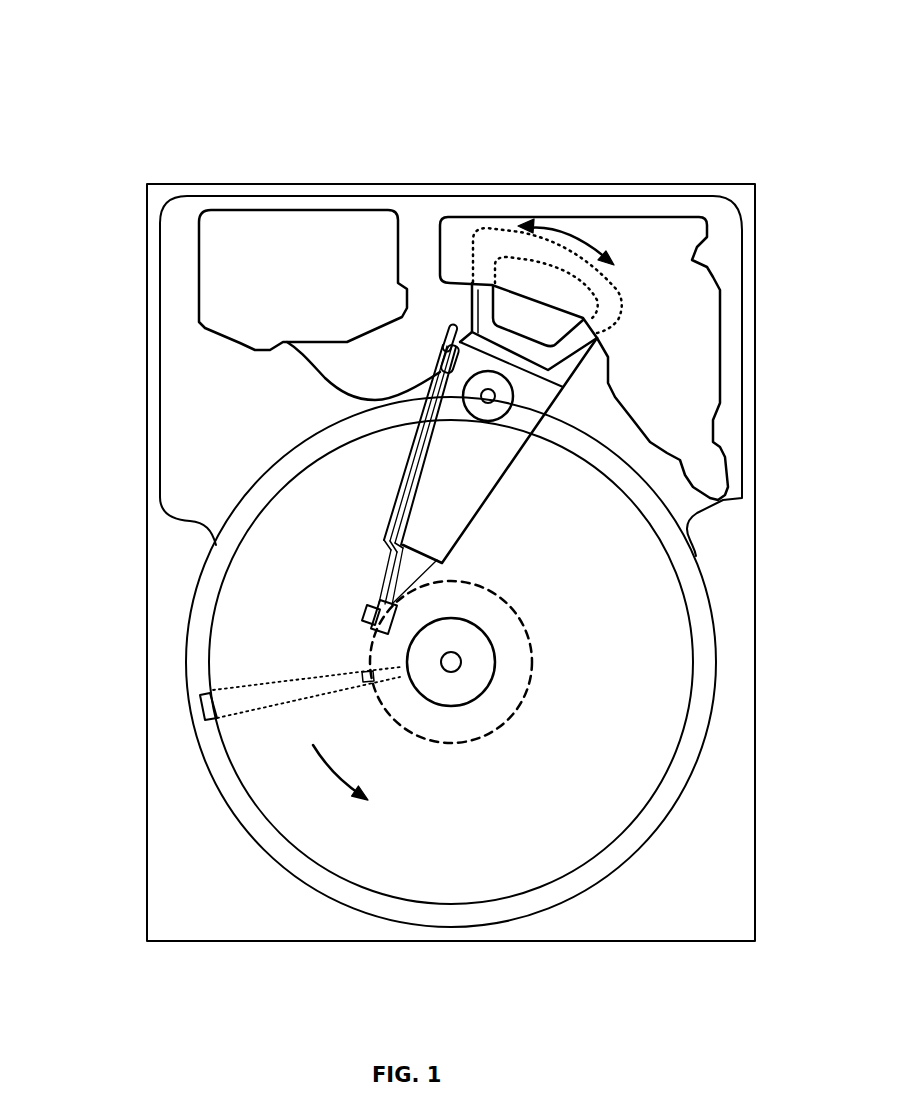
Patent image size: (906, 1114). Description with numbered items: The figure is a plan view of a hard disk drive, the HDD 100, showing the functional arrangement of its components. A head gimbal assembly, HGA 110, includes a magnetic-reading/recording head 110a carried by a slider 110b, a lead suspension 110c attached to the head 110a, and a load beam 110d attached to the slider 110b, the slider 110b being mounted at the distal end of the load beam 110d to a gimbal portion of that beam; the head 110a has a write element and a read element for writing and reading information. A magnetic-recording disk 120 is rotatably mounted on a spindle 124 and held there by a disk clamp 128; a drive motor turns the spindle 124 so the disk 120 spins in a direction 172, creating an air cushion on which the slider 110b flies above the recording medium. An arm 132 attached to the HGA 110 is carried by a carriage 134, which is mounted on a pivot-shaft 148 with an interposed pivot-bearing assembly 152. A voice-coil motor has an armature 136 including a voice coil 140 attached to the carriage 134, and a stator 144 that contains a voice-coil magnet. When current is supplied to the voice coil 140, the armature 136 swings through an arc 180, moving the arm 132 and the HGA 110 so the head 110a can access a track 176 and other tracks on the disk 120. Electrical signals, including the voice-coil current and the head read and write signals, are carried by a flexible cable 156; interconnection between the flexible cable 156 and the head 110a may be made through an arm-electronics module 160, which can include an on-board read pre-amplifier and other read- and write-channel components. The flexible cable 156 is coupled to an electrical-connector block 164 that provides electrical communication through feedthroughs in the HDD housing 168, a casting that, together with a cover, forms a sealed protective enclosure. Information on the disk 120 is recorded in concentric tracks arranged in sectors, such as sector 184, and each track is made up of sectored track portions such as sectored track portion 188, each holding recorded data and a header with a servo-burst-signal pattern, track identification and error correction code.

The HDD 100 is at (78, 66).
The head gimbal assembly 110 is at (80, 475).
The magnetic-reading/recording head 110a is at (368, 605).
The slider 110b is at (370, 604).
The lead suspension 110c is at (374, 603).
The load beam 110d is at (380, 600).
The magnetic-recording disk 120 is at (625, 617).
The spindle 124 is at (451, 662).
The disk clamp 128 is at (475, 675).
The arm 132 is at (443, 505).
The carriage 134 is at (507, 427).
The armature 136 is at (468, 313).
The voice coil 140 is at (484, 293).
The stator 144 is at (687, 305).
The pivot-shaft 148 is at (488, 396).
The pivot-bearing assembly 152 is at (500, 407).
The flexible cable 156 is at (313, 370).
The arm-electronics module 160 is at (440, 364).
The electrical-connector block 164 is at (223, 278).
The HDD housing 168 is at (737, 193).
The direction 172 is at (345, 778).
The track 176 is at (522, 622).
The arc 180 is at (562, 233).
The sector 184 is at (200, 705).
The sectored track portion 188 is at (362, 676).